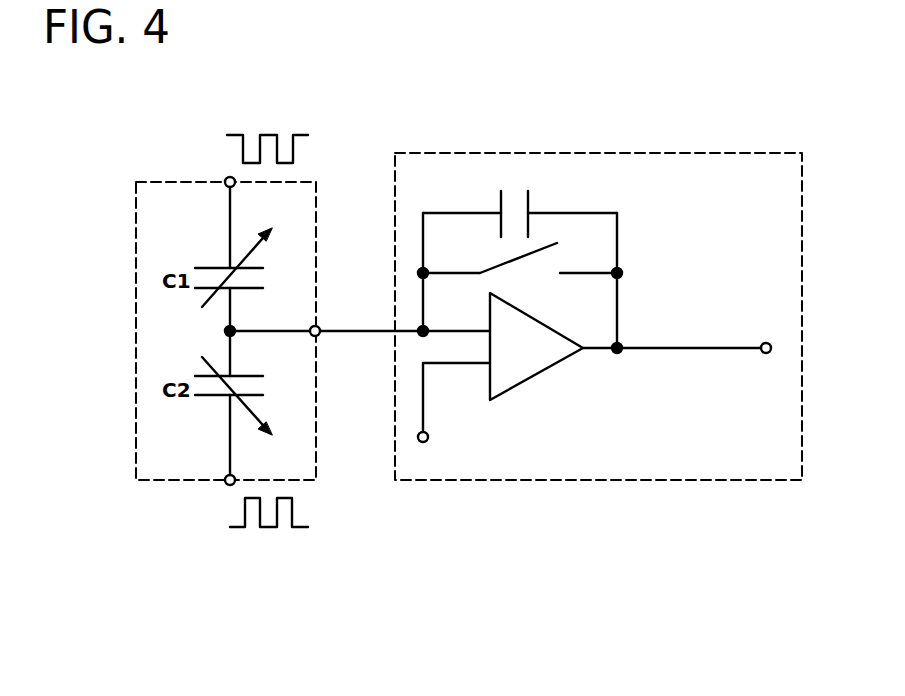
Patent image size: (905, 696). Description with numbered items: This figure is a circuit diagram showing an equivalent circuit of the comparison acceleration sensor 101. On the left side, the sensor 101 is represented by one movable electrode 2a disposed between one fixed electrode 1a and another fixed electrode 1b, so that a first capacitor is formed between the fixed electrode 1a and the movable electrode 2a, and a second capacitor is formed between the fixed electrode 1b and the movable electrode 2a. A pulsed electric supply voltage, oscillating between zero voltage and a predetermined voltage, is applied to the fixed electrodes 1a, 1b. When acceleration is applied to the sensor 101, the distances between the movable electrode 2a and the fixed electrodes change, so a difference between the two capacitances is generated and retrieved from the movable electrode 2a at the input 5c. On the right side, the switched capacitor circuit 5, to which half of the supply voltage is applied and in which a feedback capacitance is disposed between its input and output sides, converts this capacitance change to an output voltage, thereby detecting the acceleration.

The sensor 101 is at (153, 182).
The fixed electrode 1a is at (236, 181).
The fixed electrode 1b is at (236, 484).
The movable electrode 2a is at (234, 327).
The switched capacitor circuit 5 is at (648, 152).
The input terminal of charge amplifier 5c is at (318, 326).